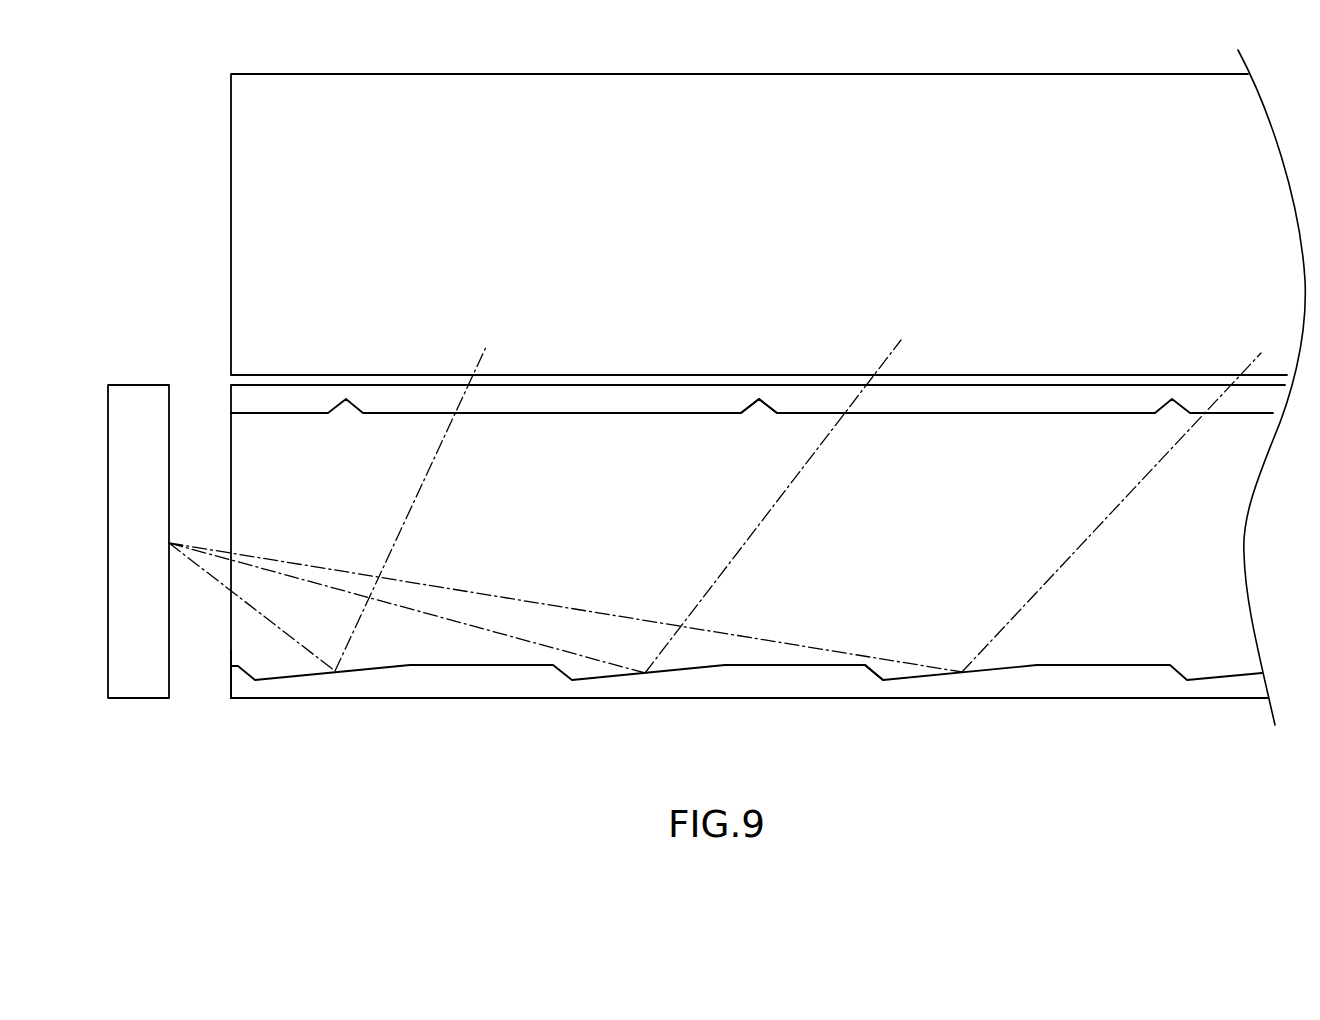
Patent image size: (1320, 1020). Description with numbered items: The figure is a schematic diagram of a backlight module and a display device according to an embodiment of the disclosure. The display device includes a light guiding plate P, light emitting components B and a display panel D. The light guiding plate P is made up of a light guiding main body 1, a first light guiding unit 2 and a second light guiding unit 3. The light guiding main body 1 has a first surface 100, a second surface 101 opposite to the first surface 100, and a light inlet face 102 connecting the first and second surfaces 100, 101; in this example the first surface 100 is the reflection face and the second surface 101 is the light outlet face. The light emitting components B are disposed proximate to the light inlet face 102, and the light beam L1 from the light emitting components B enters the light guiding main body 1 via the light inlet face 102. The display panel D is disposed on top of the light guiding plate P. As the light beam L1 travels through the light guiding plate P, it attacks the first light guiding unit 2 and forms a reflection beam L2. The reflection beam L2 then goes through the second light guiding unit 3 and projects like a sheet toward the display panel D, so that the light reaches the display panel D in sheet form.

The display panel D is at (218, 300).
The light emitting components B is at (106, 402).
The light guiding main body 1 is at (220, 423).
The second surface 101 is at (280, 413).
The light inlet face 102 is at (228, 650).
The first surface 100 is at (468, 666).
The second light guiding unit 3 is at (672, 402).
The first light guiding unit 2 is at (765, 682).
The light guiding plate P is at (286, 710).
The light beam L1 is at (292, 560).
The reflection beam L2 is at (807, 489).